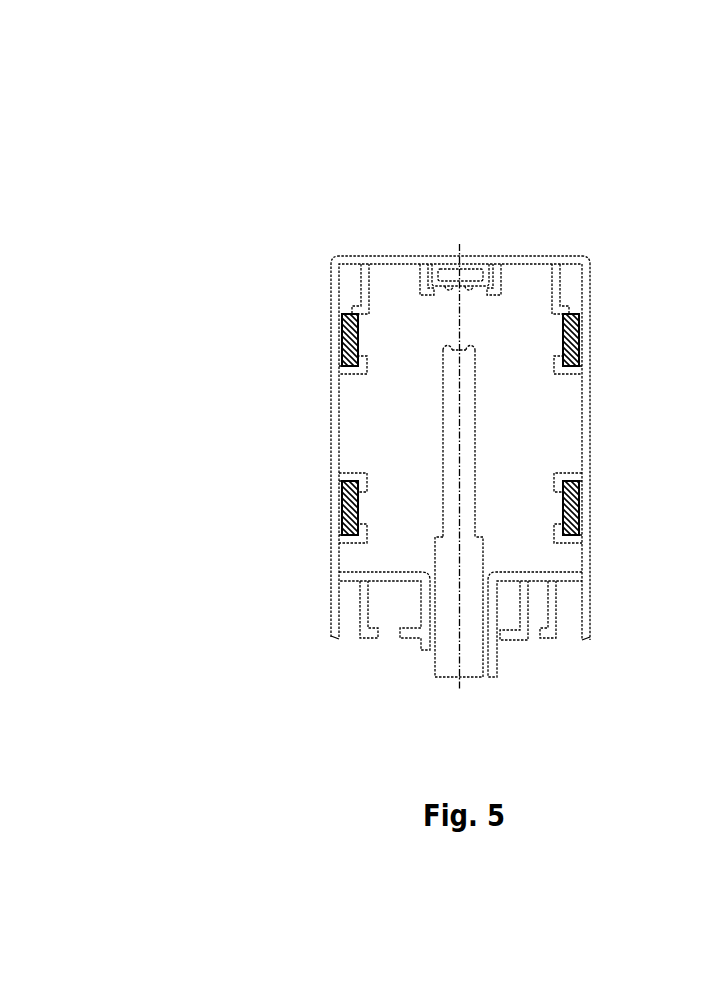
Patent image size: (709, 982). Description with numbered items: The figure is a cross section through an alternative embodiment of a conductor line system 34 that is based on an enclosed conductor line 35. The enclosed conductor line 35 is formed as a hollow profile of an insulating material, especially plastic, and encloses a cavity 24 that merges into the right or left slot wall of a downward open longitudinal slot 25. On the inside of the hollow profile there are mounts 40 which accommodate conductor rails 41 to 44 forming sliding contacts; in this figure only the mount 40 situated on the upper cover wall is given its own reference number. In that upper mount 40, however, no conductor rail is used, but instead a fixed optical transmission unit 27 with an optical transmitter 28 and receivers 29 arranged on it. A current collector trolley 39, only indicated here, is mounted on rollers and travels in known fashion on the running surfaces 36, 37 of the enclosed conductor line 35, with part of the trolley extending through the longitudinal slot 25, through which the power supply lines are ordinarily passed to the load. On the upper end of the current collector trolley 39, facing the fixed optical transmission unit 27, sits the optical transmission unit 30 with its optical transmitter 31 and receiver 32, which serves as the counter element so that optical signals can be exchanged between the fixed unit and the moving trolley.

The conductor line system 34 is at (312, 110).
The enclosed conductor line 35 is at (540, 254).
The cavity 24 is at (370, 414).
The longitudinal slot 25 is at (465, 484).
The fixed optical transmission unit 27 is at (462, 258).
The optical transmitter 28 is at (447, 281).
The receivers 29 is at (476, 281).
The optical transmission unit 30 is at (480, 331).
The optical transmitter 31 is at (476, 346).
The receiver 32 is at (446, 345).
The running surface 36 is at (399, 582).
The running surface 37 is at (522, 582).
The current collector trolley 39 is at (481, 403).
The mount 40 is at (404, 211).
The conductor rail 41 is at (342, 350).
The conductor rail 42 is at (342, 508).
The conductor rail 43 is at (579, 351).
The conductor rail 44 is at (579, 508).